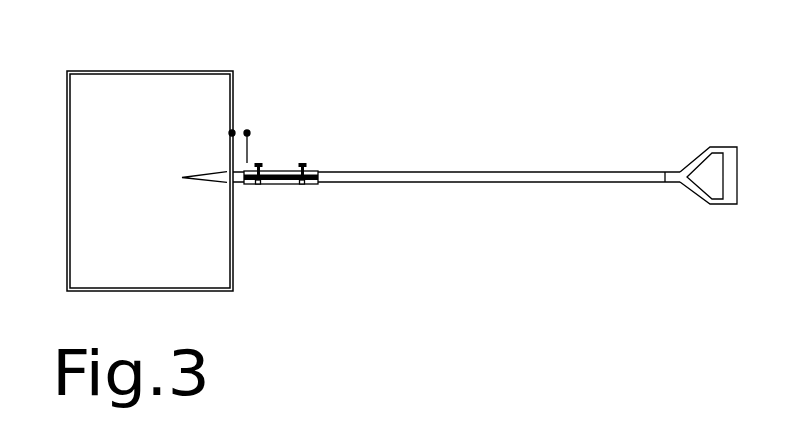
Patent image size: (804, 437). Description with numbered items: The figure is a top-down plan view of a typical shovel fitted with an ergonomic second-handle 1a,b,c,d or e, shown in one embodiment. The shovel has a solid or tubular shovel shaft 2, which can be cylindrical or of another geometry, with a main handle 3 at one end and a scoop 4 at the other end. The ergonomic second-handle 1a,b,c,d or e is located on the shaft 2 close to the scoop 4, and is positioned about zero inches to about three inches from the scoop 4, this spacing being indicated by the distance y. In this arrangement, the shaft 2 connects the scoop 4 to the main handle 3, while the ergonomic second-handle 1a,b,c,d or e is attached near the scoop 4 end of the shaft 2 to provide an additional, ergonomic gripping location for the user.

The ergonomic second-handle 1a,b,c,d or e is at (283, 171).
The shovel shaft 2 is at (430, 195).
The main handle 3 is at (257, 184).
The scoop 4 is at (157, 127).
The distance from the scoop y is at (247, 133).